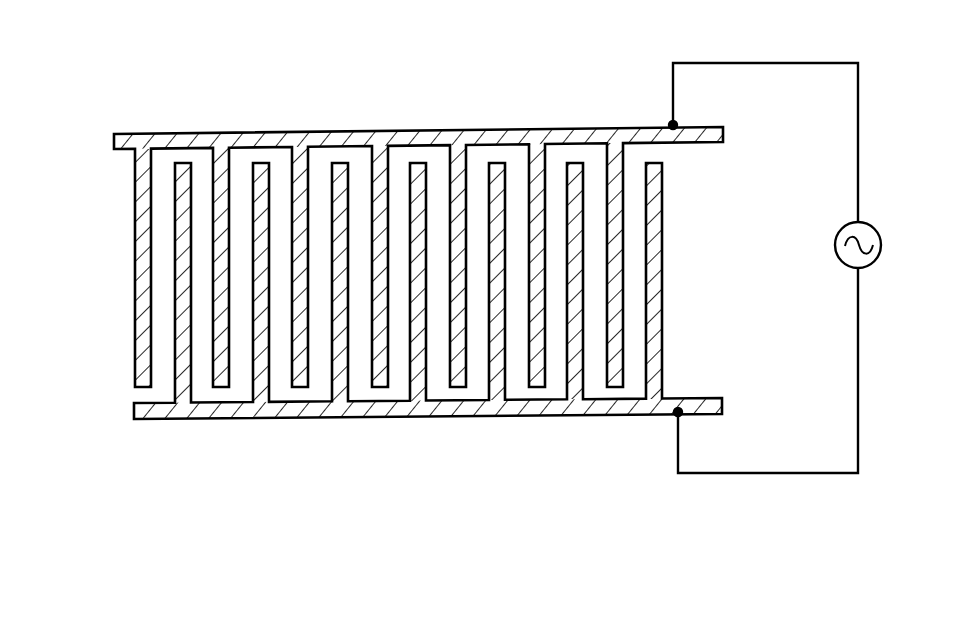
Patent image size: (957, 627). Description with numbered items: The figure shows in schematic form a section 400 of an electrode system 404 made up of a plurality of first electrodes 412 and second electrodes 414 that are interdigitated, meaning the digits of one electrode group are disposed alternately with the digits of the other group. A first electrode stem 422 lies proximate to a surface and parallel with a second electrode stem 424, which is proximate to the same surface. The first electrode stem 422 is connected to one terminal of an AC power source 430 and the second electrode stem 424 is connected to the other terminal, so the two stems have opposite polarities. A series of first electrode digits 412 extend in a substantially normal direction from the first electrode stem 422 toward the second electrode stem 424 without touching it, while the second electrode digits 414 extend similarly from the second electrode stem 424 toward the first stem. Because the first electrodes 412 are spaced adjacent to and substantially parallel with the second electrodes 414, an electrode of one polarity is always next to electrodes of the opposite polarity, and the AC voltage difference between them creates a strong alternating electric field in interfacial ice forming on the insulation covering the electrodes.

The section 400 is at (170, 63).
The electrode system 404 is at (88, 351).
The first electrodes 412 is at (140, 183).
The second electrodes 414 is at (655, 170).
The first electrode stem 422 is at (425, 130).
The second electrode stem 424 is at (312, 413).
The AC power source 430 is at (838, 262).